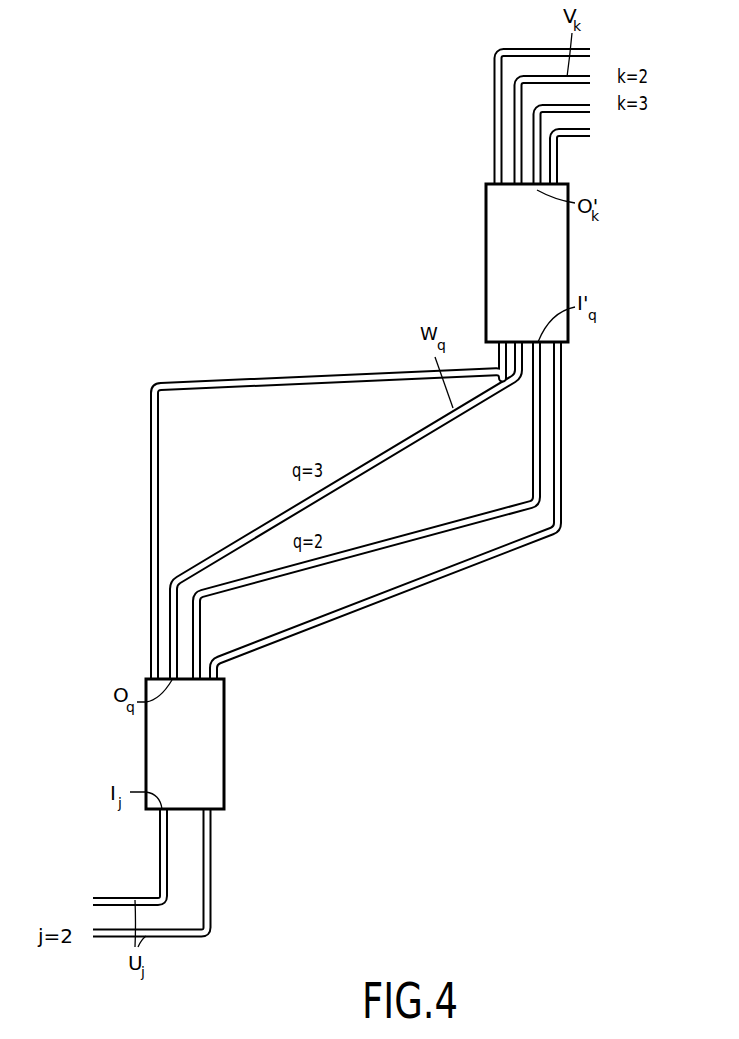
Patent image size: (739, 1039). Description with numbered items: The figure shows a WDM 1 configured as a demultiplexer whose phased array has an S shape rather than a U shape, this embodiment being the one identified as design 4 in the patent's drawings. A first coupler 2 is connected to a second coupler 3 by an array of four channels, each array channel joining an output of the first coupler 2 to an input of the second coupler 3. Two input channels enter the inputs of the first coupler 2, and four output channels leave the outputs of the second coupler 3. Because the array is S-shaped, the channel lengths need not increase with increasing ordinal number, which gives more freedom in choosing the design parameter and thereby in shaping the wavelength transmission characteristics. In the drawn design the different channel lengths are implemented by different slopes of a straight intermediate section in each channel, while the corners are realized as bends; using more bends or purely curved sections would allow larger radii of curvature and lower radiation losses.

The WDM 1 is at (342, 474).
The first coupler 2 is at (158, 747).
The second coupler 3 is at (555, 252).
The channels with index 4 (k=4, q=4) 4 is at (402, 398).